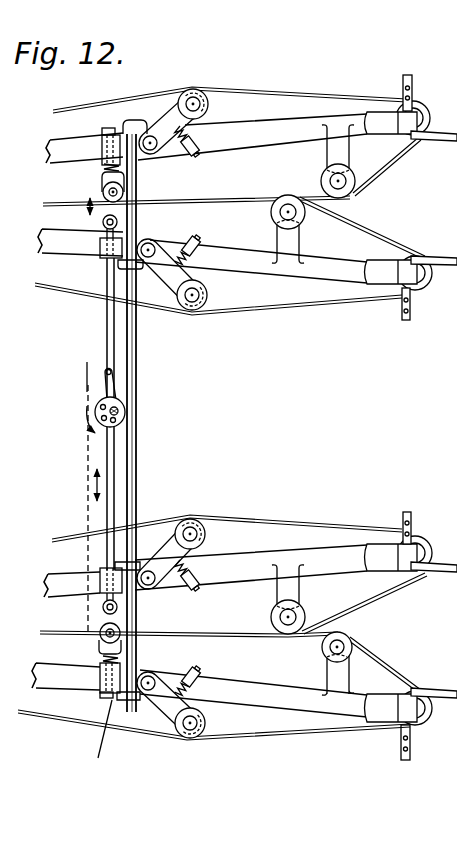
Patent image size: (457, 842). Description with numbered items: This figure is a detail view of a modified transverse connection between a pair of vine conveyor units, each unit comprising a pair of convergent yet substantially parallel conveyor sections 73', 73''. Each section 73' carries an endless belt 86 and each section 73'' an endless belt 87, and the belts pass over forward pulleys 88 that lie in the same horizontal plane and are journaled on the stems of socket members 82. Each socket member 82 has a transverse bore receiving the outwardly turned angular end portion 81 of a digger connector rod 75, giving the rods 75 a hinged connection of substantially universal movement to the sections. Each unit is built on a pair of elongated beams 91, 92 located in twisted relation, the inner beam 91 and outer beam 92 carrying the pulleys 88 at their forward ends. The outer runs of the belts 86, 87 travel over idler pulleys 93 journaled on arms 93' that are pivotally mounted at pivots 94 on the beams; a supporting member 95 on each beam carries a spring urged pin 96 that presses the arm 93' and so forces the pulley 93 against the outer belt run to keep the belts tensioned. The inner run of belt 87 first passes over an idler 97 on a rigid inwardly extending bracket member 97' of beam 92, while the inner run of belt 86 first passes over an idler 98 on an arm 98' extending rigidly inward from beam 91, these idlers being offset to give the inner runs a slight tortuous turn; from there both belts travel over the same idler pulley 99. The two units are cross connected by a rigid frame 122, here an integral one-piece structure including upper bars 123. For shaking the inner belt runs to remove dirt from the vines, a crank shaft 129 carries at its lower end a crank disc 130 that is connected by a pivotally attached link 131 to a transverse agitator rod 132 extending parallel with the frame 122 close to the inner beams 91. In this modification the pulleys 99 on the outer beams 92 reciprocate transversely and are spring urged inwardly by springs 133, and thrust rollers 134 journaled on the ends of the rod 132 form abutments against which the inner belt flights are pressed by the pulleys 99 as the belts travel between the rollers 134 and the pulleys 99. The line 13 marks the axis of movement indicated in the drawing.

The axis line 13 is at (97, 378).
The conveyor section 73' is at (341, 739).
The conveyor section 73'' is at (227, 525).
The digger connector rod 75 is at (430, 688).
The angular end portion 81 is at (402, 745).
The socket member 82 is at (405, 706).
The endless belt 86 is at (154, 736).
The endless belt 87 is at (328, 302).
The belt pulley 88 is at (404, 575).
The beam 91 is at (257, 263).
The beam 92 is at (257, 128).
The idler pulley 93 is at (204, 413).
The arm 93' is at (172, 413).
The pivot 94 is at (149, 243).
The supporting member 95 is at (200, 246).
The spring urged pin 96 is at (185, 240).
The idler 97 is at (351, 643).
The bracket member 97' is at (347, 663).
The idler 98 is at (313, 399).
The arm 98' is at (313, 379).
The idler pulley 99 is at (100, 187).
The rigid frame 122 is at (140, 375).
The upper bar 123 is at (130, 343).
The shaft 129 is at (118, 408).
The crank disc 130 is at (118, 420).
The link 131 is at (100, 390).
The agitator rod 132 is at (106, 447).
The spring 133 is at (106, 166).
The thrust roller 134 is at (102, 233).